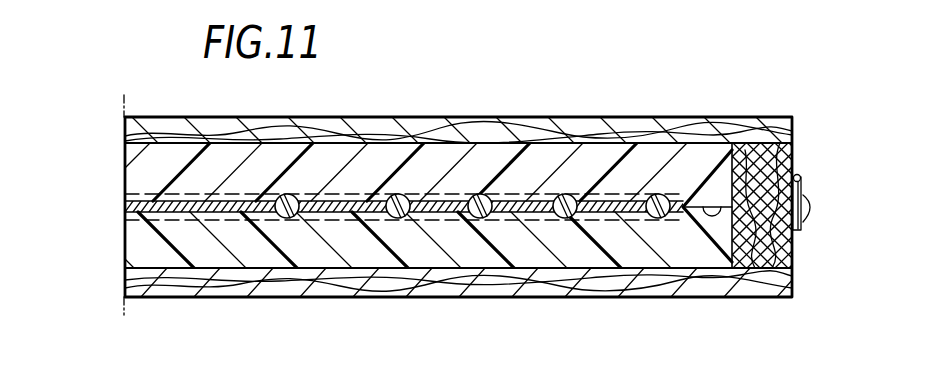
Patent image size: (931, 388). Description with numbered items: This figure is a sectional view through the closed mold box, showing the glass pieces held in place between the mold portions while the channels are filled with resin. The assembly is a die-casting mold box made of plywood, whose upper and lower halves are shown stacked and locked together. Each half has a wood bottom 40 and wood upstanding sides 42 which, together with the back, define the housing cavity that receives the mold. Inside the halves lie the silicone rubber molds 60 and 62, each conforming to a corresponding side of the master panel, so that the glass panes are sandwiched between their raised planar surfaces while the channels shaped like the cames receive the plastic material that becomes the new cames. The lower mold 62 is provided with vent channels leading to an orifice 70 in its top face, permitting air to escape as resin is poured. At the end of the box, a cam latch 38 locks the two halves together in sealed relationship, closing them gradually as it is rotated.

The wood bottom 40 is at (600, 117).
The mold 60 is at (125, 172).
The mold 62 is at (125, 247).
The wood upstanding side 42 is at (793, 155).
The orifice 70 is at (711, 215).
The latch 38 is at (803, 193).